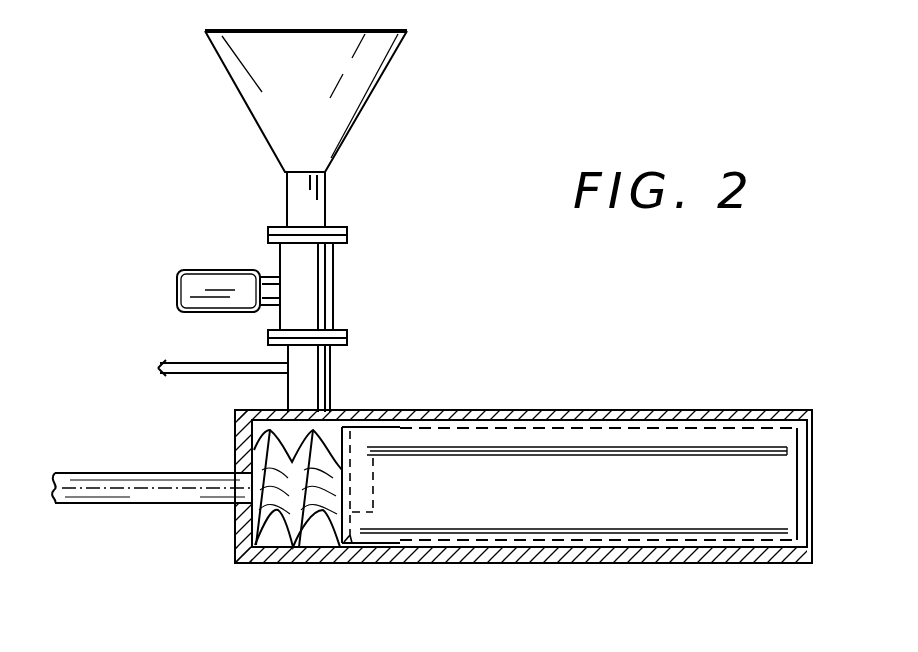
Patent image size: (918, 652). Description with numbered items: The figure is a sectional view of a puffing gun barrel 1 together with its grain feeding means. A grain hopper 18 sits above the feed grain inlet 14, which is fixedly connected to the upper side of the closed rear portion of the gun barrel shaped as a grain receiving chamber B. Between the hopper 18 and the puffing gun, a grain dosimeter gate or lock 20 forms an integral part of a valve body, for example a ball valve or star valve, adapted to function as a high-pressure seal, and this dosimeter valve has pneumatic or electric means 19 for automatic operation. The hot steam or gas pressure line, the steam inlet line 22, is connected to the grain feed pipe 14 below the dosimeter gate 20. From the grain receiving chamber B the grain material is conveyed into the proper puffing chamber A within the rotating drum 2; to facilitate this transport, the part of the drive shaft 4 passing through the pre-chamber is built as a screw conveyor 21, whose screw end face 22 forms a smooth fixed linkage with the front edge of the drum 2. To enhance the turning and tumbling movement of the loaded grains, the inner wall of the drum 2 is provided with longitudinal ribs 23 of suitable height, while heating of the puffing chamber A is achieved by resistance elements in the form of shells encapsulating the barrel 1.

The barrel 1 is at (582, 410).
The rotating drum 2 is at (430, 548).
The drive shaft 4 is at (137, 483).
The feed grain inlet 14 is at (313, 380).
The grain hopper 18 is at (378, 80).
The pneumatic or electric means 19 is at (177, 290).
The grain dosimeter gate or lock 20 is at (313, 290).
The screw conveyor 21 is at (333, 527).
The steam inlet line 22 is at (185, 373).
The longitudinal ribs 23 is at (833, 482).
The puffing chamber A is at (452, 485).
The grain receiving chamber B is at (293, 445).